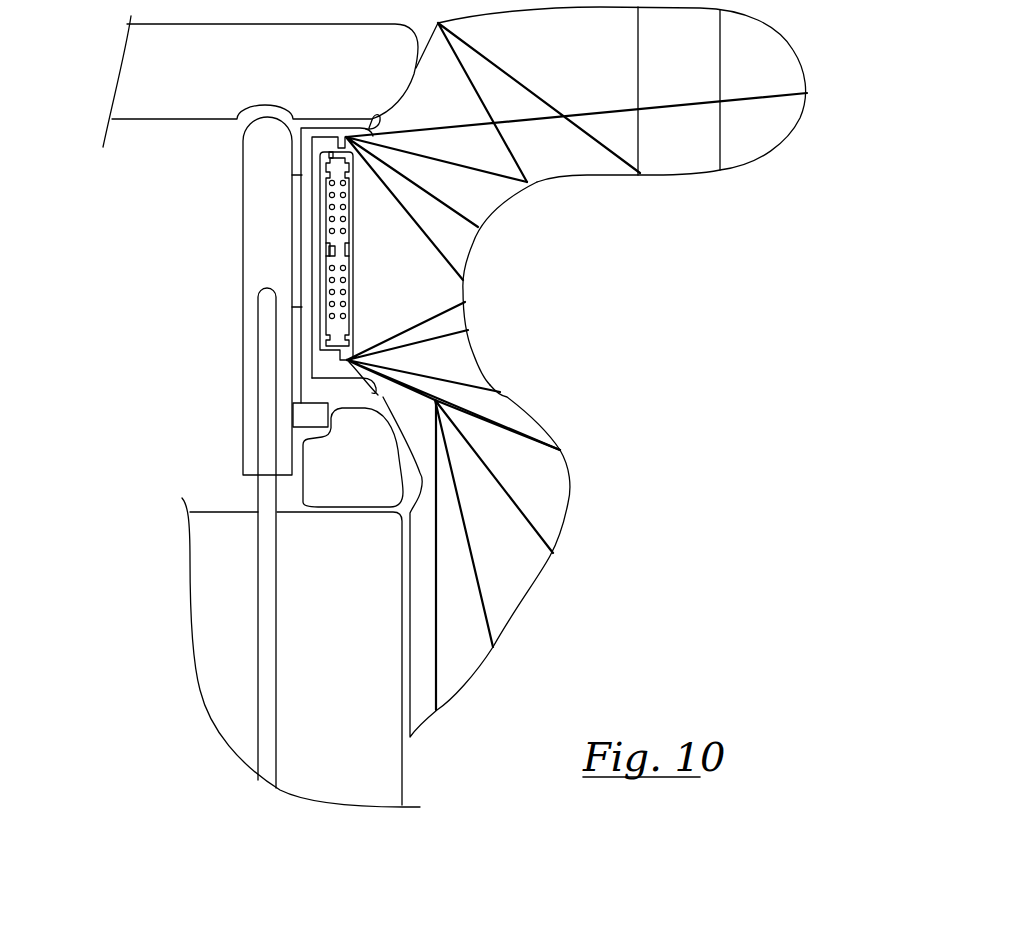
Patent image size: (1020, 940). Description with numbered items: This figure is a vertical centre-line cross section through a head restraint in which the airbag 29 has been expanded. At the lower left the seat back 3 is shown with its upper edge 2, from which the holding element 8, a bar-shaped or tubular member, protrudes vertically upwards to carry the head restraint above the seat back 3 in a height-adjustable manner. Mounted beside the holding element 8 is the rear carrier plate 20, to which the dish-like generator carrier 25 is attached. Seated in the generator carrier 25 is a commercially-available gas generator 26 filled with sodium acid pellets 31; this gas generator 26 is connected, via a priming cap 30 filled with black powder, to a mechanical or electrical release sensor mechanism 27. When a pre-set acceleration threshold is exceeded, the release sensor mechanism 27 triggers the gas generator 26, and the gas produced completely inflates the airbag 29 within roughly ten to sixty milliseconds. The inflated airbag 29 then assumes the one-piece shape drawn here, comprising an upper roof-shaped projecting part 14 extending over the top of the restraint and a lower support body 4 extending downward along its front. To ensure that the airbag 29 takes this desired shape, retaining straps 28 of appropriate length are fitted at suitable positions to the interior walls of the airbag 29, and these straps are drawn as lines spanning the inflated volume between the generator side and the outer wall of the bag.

The upper edge 2 is at (210, 542).
The seat back 3 is at (400, 773).
The lower support body 4 is at (540, 493).
The holding element 8 is at (260, 457).
The upper roof-shaped projecting part 14 is at (677, 143).
The rear carrier plate 20 is at (242, 468).
The generator carrier 25 is at (297, 340).
The gas generator 26 is at (364, 256).
The release sensor mechanism 27 is at (298, 417).
The retaining straps 28 is at (480, 590).
The airbag 29 is at (505, 383).
The priming cap 30 is at (325, 248).
The sodium acid pellets 31 is at (325, 197).